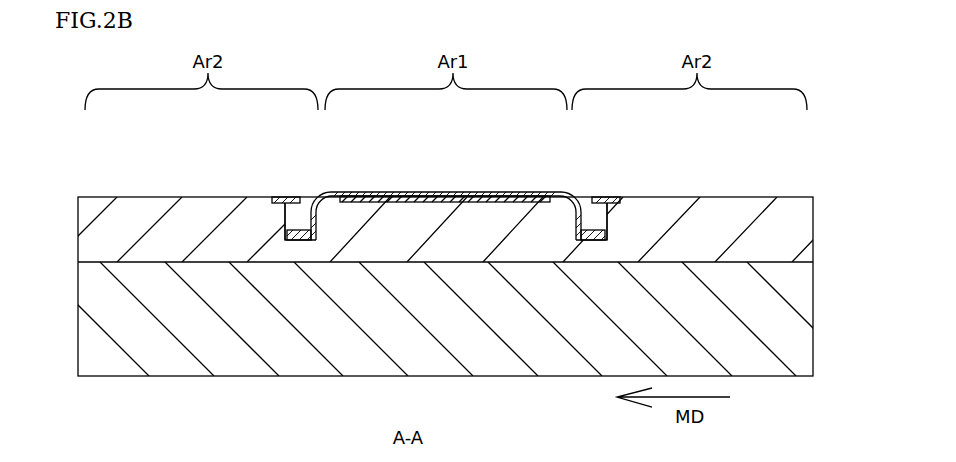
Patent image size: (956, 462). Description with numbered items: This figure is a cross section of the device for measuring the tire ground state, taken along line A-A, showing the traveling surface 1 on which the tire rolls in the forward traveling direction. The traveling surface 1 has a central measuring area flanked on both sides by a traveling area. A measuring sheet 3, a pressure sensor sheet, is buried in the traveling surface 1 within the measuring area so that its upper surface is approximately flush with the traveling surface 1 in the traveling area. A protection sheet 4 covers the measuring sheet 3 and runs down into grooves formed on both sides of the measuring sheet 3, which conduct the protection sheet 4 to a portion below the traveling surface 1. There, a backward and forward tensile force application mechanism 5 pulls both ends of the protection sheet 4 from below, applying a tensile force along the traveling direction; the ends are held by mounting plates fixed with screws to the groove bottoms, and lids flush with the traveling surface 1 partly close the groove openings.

The traveling surface 1 is at (180, 197).
The measuring sheet 3 is at (421, 196).
The protection sheet 4 is at (497, 192).
The backward and forward tensile force application mechanism 5 is at (292, 242).